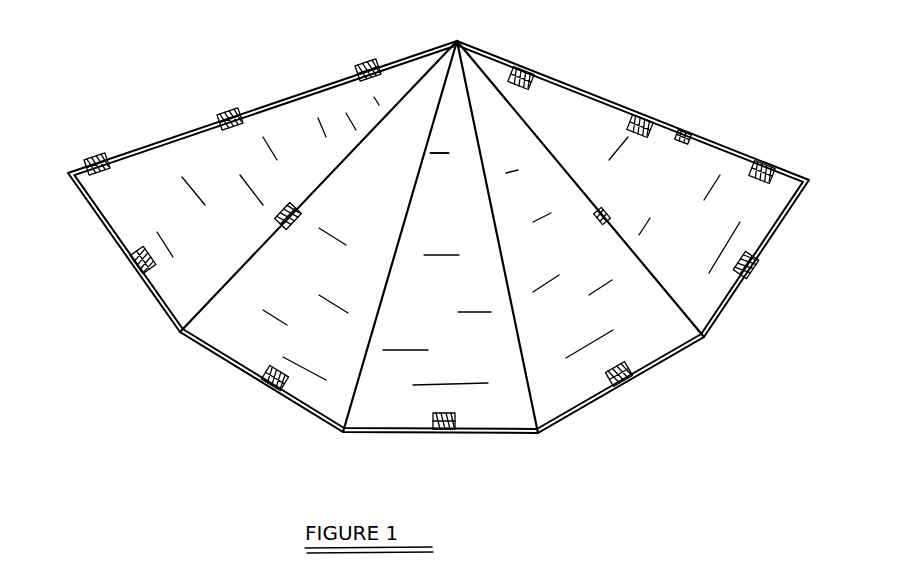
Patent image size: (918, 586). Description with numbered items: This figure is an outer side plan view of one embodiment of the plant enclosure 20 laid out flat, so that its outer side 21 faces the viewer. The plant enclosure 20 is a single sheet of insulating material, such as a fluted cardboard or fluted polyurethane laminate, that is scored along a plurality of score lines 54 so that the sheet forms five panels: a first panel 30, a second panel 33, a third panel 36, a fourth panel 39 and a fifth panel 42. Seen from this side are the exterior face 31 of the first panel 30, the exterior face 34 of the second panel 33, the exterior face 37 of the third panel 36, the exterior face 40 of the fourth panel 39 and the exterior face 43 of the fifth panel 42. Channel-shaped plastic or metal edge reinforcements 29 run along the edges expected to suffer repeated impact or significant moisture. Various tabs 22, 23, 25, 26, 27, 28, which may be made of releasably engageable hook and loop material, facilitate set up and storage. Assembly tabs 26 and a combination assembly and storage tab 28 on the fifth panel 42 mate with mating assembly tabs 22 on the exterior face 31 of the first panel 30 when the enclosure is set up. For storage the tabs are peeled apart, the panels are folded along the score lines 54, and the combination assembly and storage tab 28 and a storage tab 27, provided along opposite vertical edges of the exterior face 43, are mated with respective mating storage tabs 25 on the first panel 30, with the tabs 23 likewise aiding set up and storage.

The plant enclosure 20 is at (630, 47).
The outer side 21 is at (703, 345).
The mating assembly tab 22 is at (516, 88).
The tab 23 is at (125, 258).
The mating storage tab 25 is at (680, 135).
The assembly tab 26 is at (92, 152).
The storage tab 27 is at (295, 228).
The combination assembly and storage tab 28 is at (221, 112).
The edge reinforcement 29 is at (148, 147).
The first panel 30 is at (709, 295).
The exterior face of the first panel 31 is at (561, 147).
The second panel 33 is at (553, 400).
The exterior face of the second panel 34 is at (575, 328).
The third panel 36 is at (366, 415).
The exterior face of the third panel 37 is at (430, 312).
The fourth panel 39 is at (248, 350).
The exterior face of the fourth panel 40 is at (286, 296).
The fifth panel 42 is at (173, 287).
The exterior face of the fifth panel 43 is at (236, 248).
The score line 54 is at (335, 183).